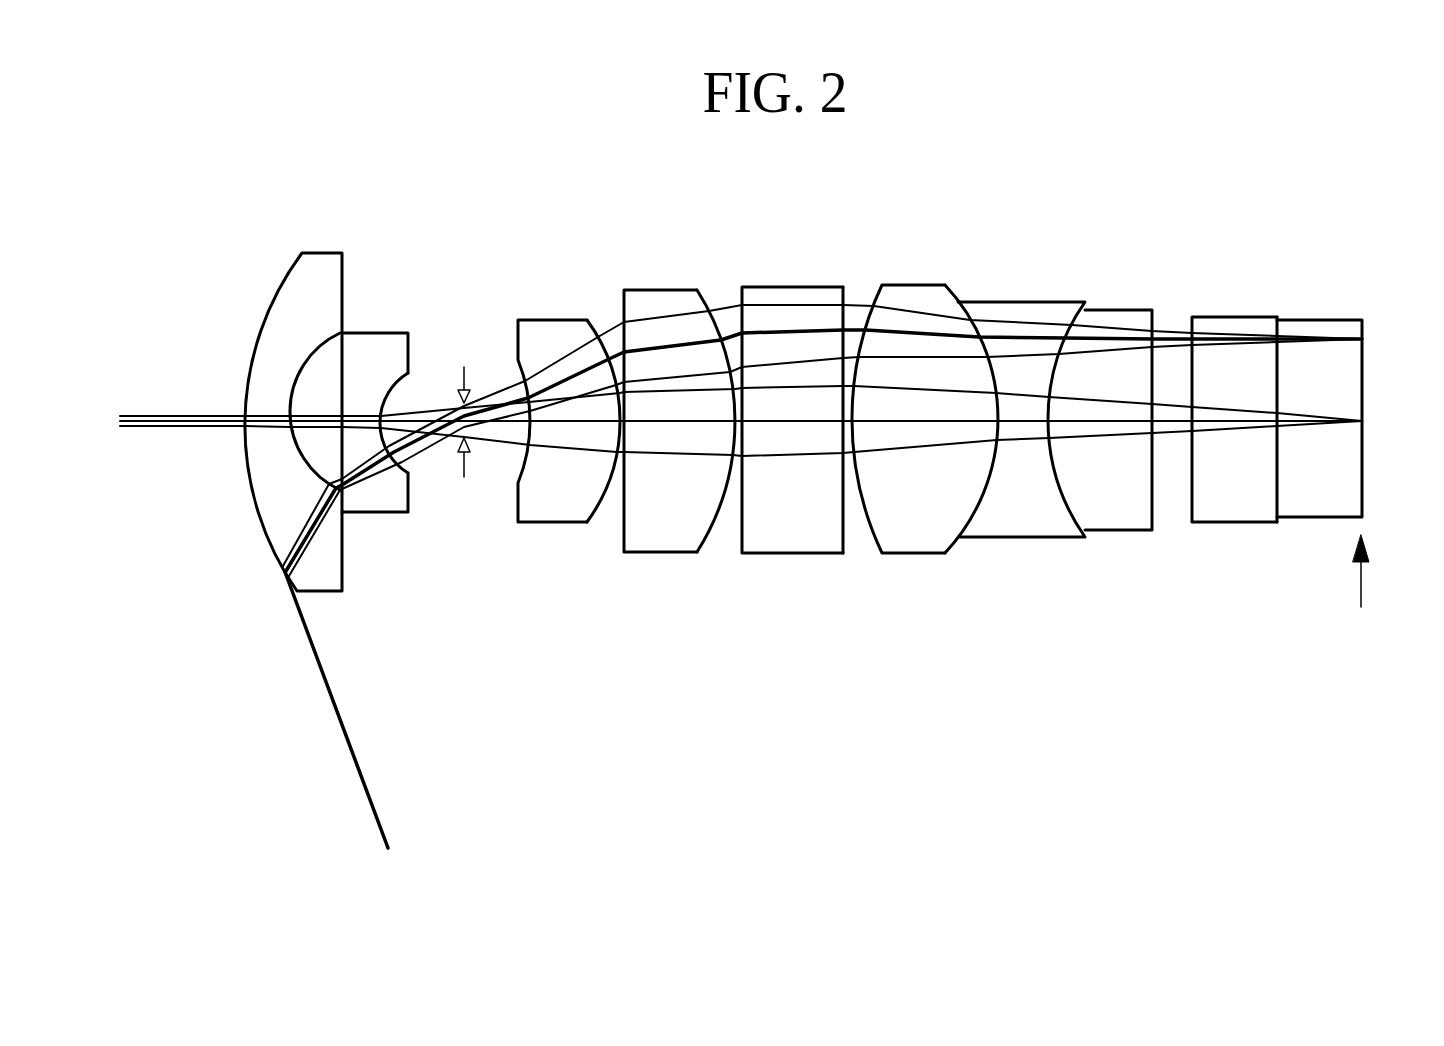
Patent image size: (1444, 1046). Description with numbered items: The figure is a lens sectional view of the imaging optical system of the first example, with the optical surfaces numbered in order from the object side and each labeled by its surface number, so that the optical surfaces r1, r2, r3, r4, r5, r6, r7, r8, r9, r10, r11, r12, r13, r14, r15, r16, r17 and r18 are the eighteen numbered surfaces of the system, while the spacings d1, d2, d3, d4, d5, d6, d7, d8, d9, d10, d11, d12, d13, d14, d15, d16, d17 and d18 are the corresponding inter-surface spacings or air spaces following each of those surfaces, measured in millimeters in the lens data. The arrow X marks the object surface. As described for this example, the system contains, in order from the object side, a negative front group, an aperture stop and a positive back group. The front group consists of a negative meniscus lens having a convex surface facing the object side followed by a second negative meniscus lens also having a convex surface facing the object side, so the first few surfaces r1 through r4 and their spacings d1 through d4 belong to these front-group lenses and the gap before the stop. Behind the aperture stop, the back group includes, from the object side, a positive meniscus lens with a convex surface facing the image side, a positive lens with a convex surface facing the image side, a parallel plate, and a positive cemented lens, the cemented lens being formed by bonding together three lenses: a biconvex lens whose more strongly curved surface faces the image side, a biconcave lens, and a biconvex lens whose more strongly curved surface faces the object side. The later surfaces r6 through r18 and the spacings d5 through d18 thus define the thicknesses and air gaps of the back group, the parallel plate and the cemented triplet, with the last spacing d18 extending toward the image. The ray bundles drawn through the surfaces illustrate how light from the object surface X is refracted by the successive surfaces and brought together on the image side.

The inter-surface spacing d1 is at (268, 418).
The inter-surface spacing d2 is at (315, 417).
The inter-surface spacing d3 is at (362, 417).
The inter-surface spacing d4 is at (420, 405).
The inter-surface spacing d5 is at (498, 410).
The inter-surface spacing d6 is at (562, 417).
The inter-surface spacing d7 is at (617, 377).
The inter-surface spacing d8 is at (677, 423).
The inter-surface spacing d9 is at (733, 377).
The inter-surface spacing d10 is at (765, 420).
The inter-surface spacing d11 is at (878, 552).
The inter-surface spacing d12 is at (917, 423).
The inter-surface spacing d13 is at (1035, 423).
The inter-surface spacing d14 is at (1108, 423).
The inter-surface spacing d15 is at (1168, 417).
The inter-surface spacing d16 is at (1218, 423).
The inter-surface spacing d17 is at (1280, 412).
The inter-surface spacing d18 is at (1335, 413).
The optical surface r1 is at (247, 467).
The optical surface r2 is at (308, 474).
The optical surface r3 is at (342, 458).
The optical surface r4 is at (400, 462).
The optical surface r5 is at (466, 463).
The optical surface r6 is at (513, 470).
The optical surface r7 is at (592, 515).
The optical surface r8 is at (620, 535).
The optical surface r9 is at (703, 545).
The optical surface r10 is at (738, 538).
The optical surface r11 is at (852, 555).
The optical surface r12 is at (873, 540).
The optical surface r13 is at (972, 517).
The optical surface r14 is at (1075, 520).
The optical surface r15 is at (1155, 513).
The optical surface r16 is at (1192, 500).
The optical surface r17 is at (1280, 507).
The optical surface r18 is at (1277, 480).
The object surface X is at (1361, 592).